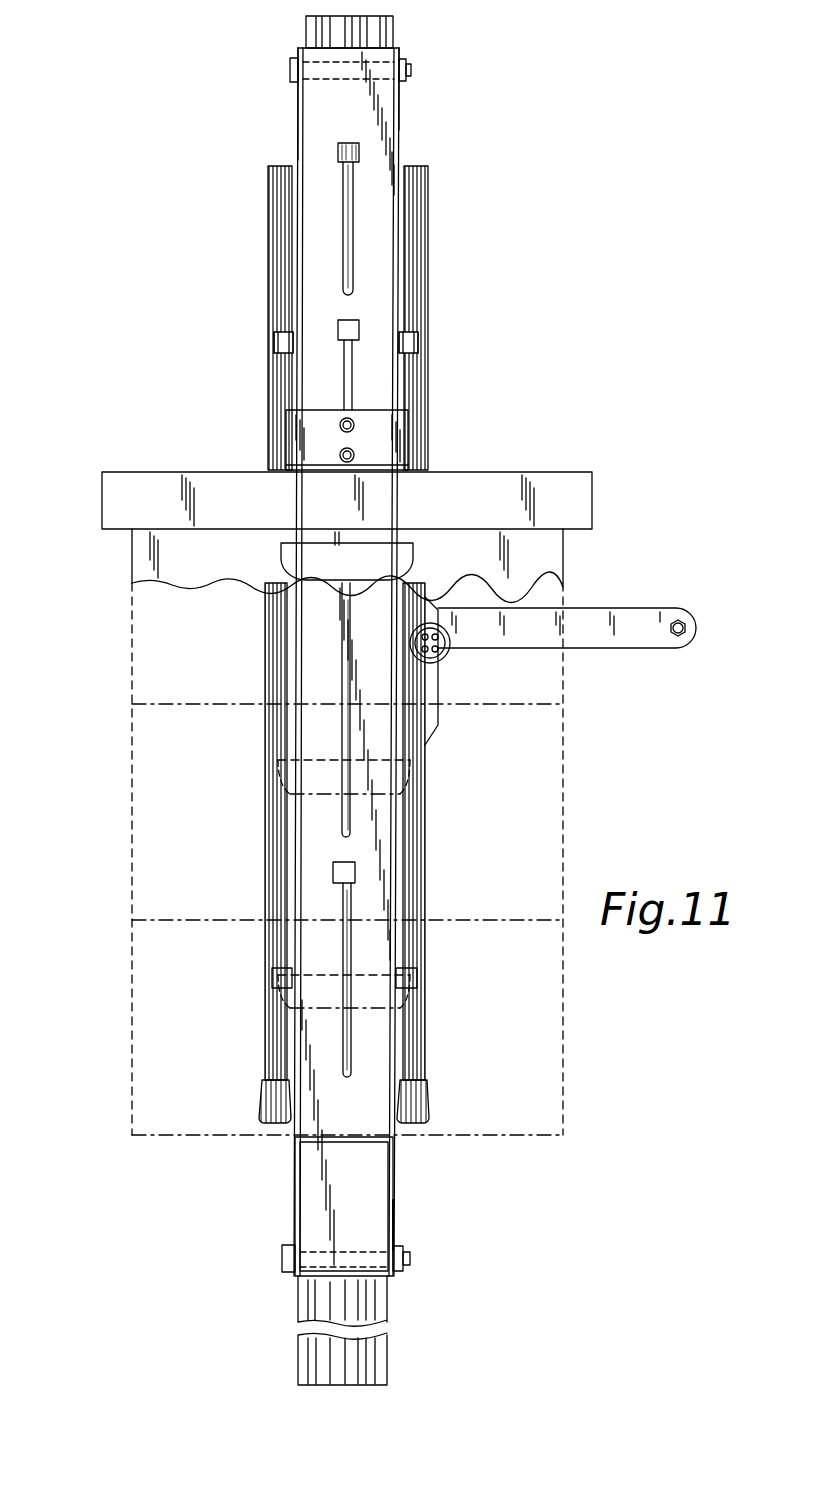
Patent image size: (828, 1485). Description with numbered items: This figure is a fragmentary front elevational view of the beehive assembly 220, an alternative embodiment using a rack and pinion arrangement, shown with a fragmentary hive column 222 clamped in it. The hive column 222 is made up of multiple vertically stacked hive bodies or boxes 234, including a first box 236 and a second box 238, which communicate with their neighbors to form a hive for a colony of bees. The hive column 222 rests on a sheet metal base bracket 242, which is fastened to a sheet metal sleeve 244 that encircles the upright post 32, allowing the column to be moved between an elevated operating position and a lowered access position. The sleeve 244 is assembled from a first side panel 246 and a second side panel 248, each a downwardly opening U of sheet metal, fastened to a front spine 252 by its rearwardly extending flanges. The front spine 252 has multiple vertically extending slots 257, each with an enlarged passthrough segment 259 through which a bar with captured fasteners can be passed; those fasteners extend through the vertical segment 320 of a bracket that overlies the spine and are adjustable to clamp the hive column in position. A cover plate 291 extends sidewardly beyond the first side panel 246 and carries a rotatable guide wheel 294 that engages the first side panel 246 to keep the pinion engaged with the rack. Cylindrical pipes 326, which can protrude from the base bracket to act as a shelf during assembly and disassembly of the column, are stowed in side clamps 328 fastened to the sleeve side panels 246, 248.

The post 32 is at (306, 33).
The beehive assembly 220 is at (470, 316).
The hive column 222 is at (563, 558).
The hive bodies or boxes 234 is at (132, 553).
The first box 236 is at (130, 1028).
The second box 238 is at (563, 810).
The base bracket 242 is at (370, 1178).
The sleeve 244 is at (399, 118).
The first side panel 246 is at (385, 135).
The second side panel 248 is at (298, 126).
The front spine 252 is at (404, 220).
The slot 257 is at (345, 206).
The passthrough segment 259 is at (338, 150).
The cover plate 291 is at (438, 722).
The guide wheel 294 is at (440, 660).
The vertical segment 320 is at (400, 450).
The pipes 326 is at (265, 862).
The side clamps 328 is at (274, 343).